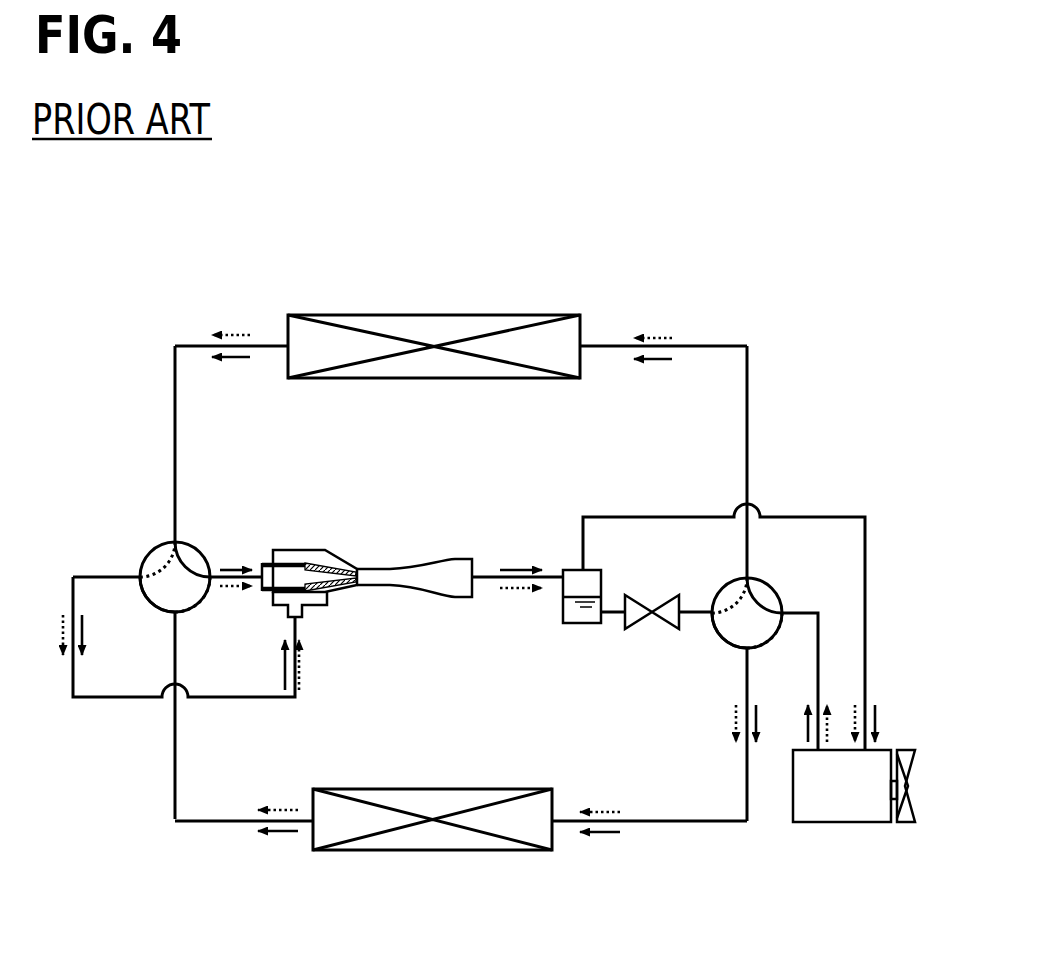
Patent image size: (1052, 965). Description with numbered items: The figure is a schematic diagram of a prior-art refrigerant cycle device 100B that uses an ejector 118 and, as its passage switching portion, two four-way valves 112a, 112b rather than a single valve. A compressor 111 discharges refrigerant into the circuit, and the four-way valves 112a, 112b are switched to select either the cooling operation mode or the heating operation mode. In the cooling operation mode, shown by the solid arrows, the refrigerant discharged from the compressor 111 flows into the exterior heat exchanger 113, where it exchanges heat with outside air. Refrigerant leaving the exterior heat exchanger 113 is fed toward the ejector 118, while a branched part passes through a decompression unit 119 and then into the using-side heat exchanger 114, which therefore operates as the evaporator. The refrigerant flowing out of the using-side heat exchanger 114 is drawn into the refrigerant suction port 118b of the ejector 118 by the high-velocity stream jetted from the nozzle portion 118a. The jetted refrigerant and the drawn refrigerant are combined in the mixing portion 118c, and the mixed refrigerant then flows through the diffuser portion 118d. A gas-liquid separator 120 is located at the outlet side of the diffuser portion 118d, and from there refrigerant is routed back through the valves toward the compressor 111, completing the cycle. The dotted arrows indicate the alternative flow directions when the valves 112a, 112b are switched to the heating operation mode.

The refrigerant cycle device 100B is at (632, 285).
The compressor 111 is at (793, 823).
The four-way valve 112a is at (722, 642).
The four-way valve 112b is at (222, 522).
The exterior heat exchanger 113 is at (466, 297).
The using-side heat exchanger 114 is at (465, 866).
The ejector 118 is at (413, 557).
The nozzle portion 118a is at (309, 566).
The refrigerant suction port 118b is at (288, 611).
The mixing portion 118c is at (375, 580).
The diffuser portion 118d is at (425, 586).
The decompression unit 119 is at (636, 621).
The gas-liquid separator 120 is at (601, 571).